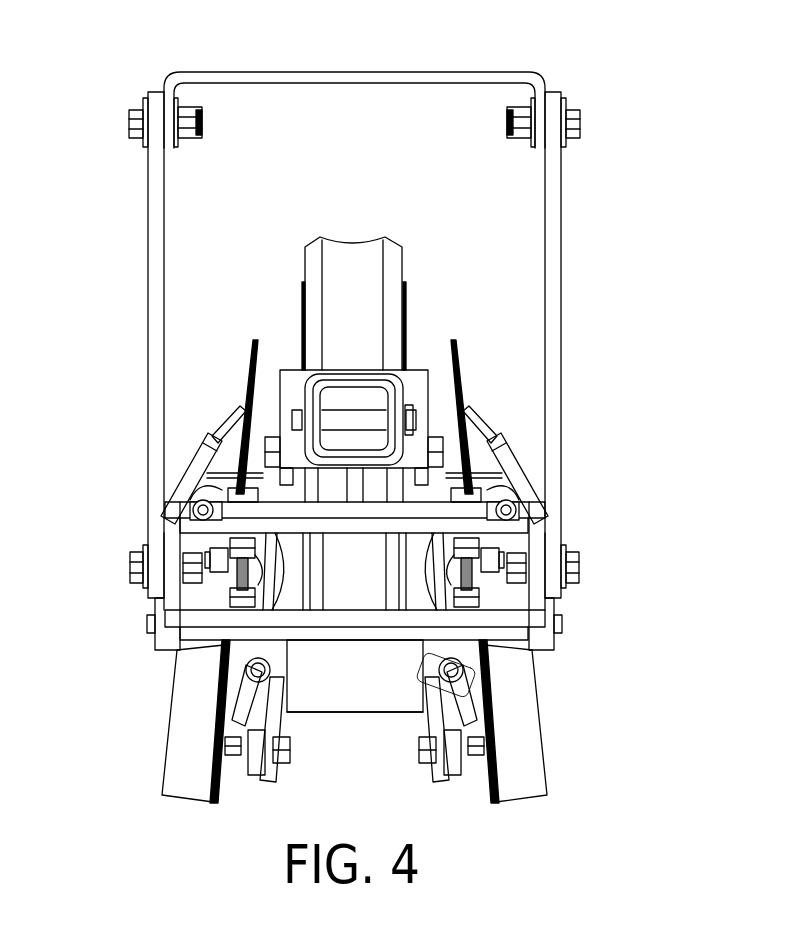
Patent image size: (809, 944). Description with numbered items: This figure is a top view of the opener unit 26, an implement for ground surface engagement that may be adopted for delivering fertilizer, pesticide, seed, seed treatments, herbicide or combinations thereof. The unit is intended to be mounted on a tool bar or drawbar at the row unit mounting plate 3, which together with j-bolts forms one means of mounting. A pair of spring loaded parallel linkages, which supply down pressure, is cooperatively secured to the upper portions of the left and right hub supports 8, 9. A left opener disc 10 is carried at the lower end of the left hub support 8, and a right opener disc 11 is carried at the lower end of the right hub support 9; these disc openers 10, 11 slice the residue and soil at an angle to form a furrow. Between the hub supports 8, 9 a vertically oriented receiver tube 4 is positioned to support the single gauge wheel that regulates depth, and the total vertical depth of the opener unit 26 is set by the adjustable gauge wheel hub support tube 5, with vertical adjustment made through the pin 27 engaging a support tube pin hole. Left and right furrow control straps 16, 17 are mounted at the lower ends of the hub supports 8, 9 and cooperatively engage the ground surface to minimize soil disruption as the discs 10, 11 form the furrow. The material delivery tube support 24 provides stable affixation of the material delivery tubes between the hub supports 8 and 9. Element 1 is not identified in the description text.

The frame upright 1 is at (148, 197).
The row unit mounting plate 3 is at (337, 72).
The receiver tube 4 is at (300, 378).
The adjustable gauge wheel hub support tube 5 is at (325, 380).
The left hub support 8 is at (178, 604).
The right hub support 9 is at (540, 607).
The left opener disc 10 is at (252, 352).
The right opener disc 11 is at (458, 360).
The left furrow control strap 16 is at (175, 722).
The right furrow control strap 17 is at (352, 243).
The material delivery tube support 24 is at (343, 712).
The opener unit 26 is at (714, 105).
The pin 27 is at (433, 416).